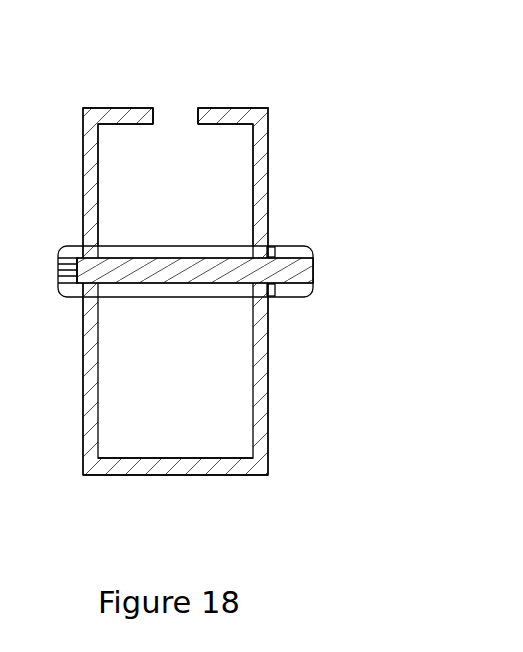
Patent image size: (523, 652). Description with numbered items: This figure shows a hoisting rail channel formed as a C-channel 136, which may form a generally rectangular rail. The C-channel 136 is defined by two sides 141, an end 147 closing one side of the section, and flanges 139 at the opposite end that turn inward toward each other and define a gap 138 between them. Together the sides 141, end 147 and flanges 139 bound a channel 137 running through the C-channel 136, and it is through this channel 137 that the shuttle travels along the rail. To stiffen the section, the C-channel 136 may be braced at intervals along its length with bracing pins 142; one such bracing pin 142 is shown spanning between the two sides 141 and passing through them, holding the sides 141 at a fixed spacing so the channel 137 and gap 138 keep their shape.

The C-channel 136 is at (290, 91).
The channel 137 is at (193, 206).
The gap 138 is at (198, 99).
The flanges 139 is at (122, 107).
The sides 141 is at (83, 372).
The bracing pins 142 is at (305, 273).
The end 147 is at (175, 465).